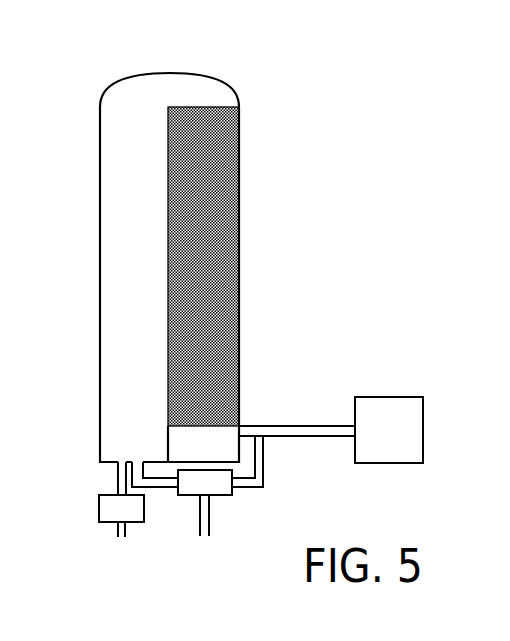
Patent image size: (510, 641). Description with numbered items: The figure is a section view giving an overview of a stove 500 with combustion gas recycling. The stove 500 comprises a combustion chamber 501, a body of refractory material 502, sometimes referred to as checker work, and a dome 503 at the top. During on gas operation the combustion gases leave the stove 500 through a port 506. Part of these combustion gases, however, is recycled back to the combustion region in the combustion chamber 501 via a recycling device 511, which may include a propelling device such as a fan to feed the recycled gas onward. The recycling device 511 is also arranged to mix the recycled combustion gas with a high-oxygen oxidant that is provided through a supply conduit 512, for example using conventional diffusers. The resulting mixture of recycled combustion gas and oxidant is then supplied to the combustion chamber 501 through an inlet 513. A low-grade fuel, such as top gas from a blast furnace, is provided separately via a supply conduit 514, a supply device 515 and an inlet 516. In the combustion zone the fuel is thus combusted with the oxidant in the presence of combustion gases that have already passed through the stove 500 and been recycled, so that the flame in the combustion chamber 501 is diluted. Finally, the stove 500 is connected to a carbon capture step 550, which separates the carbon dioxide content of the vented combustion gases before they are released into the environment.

The stove 500 is at (100, 62).
The combustion chamber 501 is at (112, 207).
The refractory material 502 is at (232, 253).
The dome 503 is at (170, 82).
The port 506 is at (231, 425).
The recycling device 511 is at (232, 493).
The supply conduit 512 is at (205, 537).
The inlet 513 is at (142, 460).
The supply conduit 514 is at (122, 537).
The supply device 515 is at (99, 507).
The inlet 516 is at (122, 461).
The carbon capture step 550 is at (390, 397).